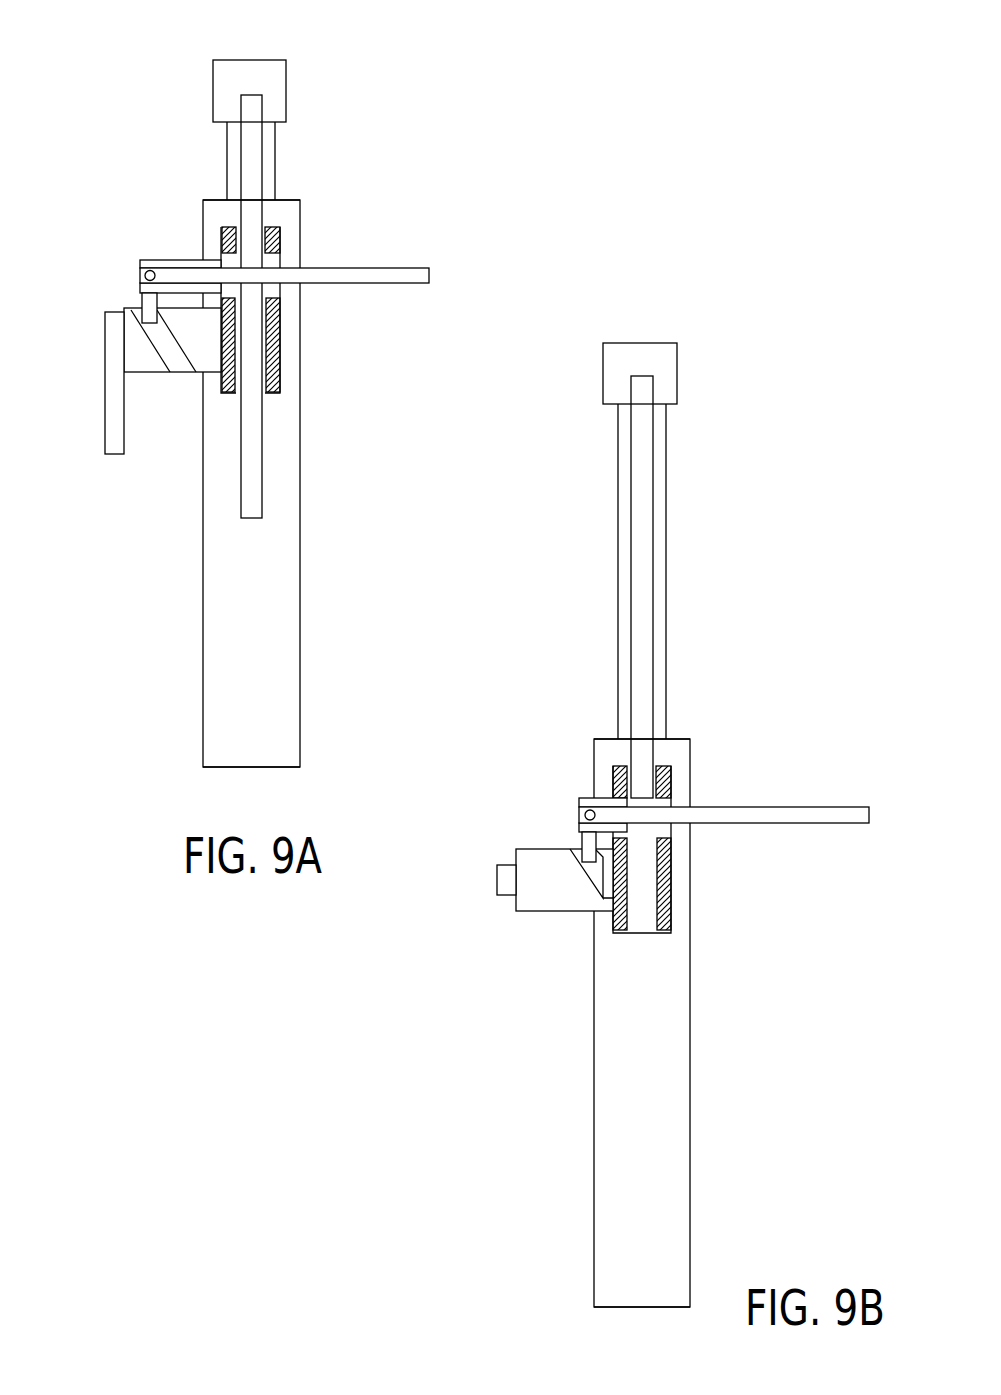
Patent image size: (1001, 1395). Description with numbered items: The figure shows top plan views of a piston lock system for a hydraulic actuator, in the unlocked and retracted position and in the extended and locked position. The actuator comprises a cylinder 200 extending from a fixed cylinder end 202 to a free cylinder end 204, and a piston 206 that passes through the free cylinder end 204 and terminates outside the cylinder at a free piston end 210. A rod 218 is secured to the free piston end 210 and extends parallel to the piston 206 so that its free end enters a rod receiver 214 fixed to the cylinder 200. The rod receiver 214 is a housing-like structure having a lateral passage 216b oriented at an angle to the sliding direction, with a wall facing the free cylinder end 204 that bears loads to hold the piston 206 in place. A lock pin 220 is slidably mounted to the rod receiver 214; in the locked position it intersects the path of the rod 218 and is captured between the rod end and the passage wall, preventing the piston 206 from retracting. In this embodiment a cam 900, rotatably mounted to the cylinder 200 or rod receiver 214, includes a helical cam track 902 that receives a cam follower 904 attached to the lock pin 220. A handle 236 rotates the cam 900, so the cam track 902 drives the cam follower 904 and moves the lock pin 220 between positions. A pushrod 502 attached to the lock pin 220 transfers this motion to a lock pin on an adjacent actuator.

In FIG. 9A, the cylinder 200 is at (241, 615).
In FIG. 9B, the cylinder 200 is at (633, 1119).
In FIG. 9A, the fixed cylinder end 202 is at (251, 768).
In FIG. 9B, the fixed cylinder end 202 is at (642, 1308).
In FIG. 9A, the free cylinder end 204 is at (215, 197).
In FIG. 9B, the free cylinder end 204 is at (607, 737).
In FIG. 9A, the piston 206 is at (267, 158).
In FIG. 9B, the piston 206 is at (660, 457).
In FIG. 9A, the free piston end 210 is at (247, 75).
In FIG. 9B, the free piston end 210 is at (640, 358).
In FIG. 9A, the rod receiver 214 is at (272, 350).
In FIG. 9B, the rod receiver 214 is at (673, 895).
In FIG. 9A, the lateral passage 216b is at (270, 258).
In FIG. 9B, the lateral passage 216b is at (669, 799).
In FIG. 9A, the rod 218 is at (262, 458).
In FIG. 9B, the rod 218 is at (646, 697).
In FIG. 9A, the lock pin 220 is at (183, 263).
In FIG. 9B, the lock pin 220 is at (607, 797).
In FIG. 9A, the handle 236 is at (117, 400).
In FIG. 9B, the handle 236 is at (507, 885).
In FIG. 9A, the pushrod 502 is at (388, 278).
In FIG. 9B, the pushrod 502 is at (792, 812).
In FIG. 9A, the cam 900 is at (137, 355).
In FIG. 9B, the cam 900 is at (538, 903).
In FIG. 9A, the cam track 902 is at (174, 352).
In FIG. 9B, the cam track 902 is at (592, 887).
In FIG. 9A, the cam follower 904 is at (148, 305).
In FIG. 9B, the cam follower 904 is at (588, 843).